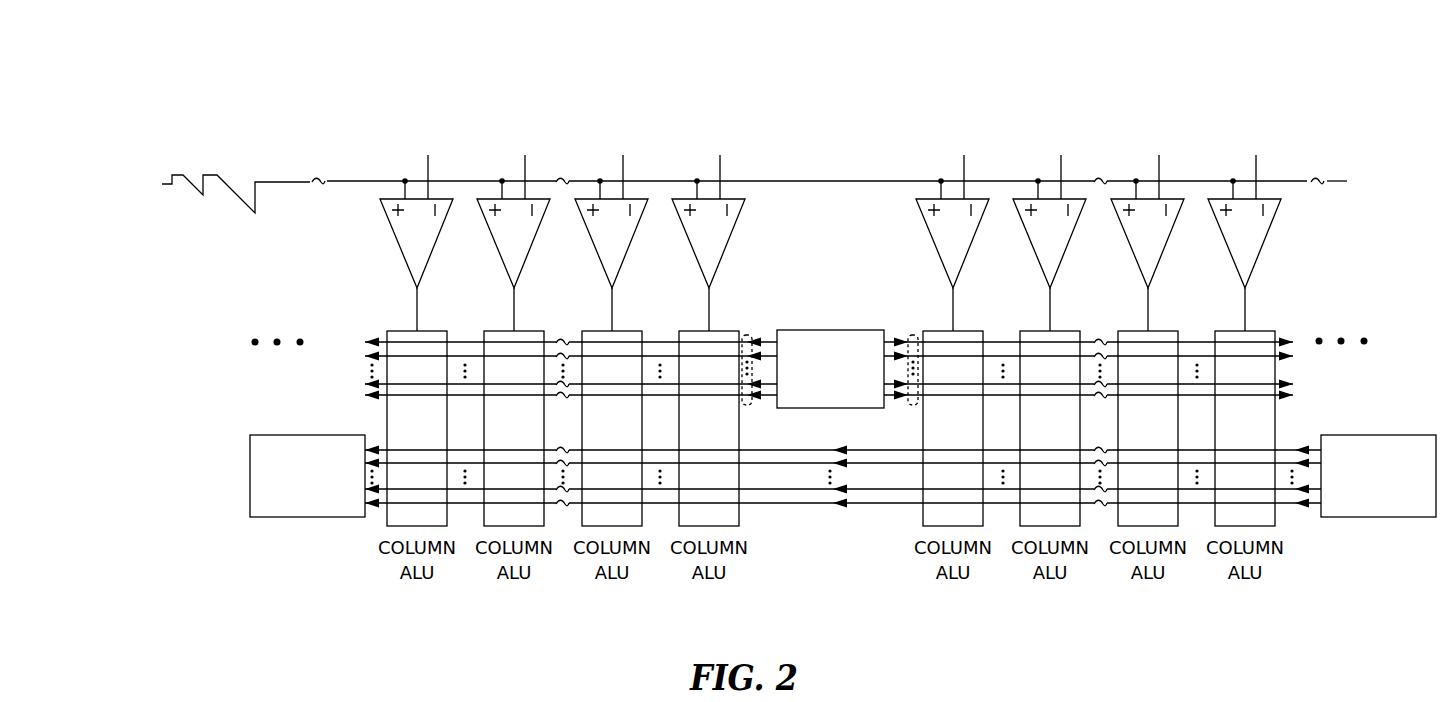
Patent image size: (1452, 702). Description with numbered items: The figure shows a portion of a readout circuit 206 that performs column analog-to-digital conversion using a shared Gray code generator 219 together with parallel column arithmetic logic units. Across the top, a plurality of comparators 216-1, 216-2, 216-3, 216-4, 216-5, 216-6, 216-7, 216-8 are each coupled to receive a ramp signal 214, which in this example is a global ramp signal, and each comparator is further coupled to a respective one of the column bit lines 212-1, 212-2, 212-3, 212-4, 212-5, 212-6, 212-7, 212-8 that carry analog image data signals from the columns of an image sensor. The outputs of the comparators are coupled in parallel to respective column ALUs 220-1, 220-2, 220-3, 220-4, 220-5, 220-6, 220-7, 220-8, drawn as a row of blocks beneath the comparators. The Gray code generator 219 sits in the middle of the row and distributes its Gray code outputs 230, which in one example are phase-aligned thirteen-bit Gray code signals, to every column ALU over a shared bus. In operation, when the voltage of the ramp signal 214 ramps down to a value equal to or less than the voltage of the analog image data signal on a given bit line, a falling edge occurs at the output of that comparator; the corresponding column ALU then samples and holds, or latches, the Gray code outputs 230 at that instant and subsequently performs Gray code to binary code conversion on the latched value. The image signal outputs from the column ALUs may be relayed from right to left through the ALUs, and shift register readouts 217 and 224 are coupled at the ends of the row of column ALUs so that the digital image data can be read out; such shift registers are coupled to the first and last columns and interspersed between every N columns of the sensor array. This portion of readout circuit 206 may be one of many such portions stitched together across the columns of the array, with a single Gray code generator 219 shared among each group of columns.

The readout circuit 206 is at (224, 59).
The column bit line 212-1 is at (428, 162).
The column bit line 212-2 is at (525, 162).
The column bit line 212-3 is at (623, 162).
The column bit line 212-4 is at (720, 162).
The column bit line 212-5 is at (964, 162).
The column bit line 212-6 is at (1061, 162).
The column bit line 212-7 is at (1159, 162).
The column bit line 212-8 is at (1256, 162).
The ramp signal 214 is at (162, 253).
The comparator 216-1 is at (395, 236).
The comparator 216-2 is at (485, 220).
The comparator 216-3 is at (609, 284).
The comparator 216-4 is at (730, 240).
The comparator 216-5 is at (927, 227).
The comparator 216-6 is at (1022, 218).
The comparator 216-7 is at (1144, 284).
The comparator 216-8 is at (1271, 228).
The shift register readout 217 is at (310, 433).
The Gray code generator 219 is at (818, 330).
The column ALU 220-1 is at (398, 332).
The column ALU 220-2 is at (493, 332).
The column ALU 220-3 is at (633, 332).
The column ALU 220-4 is at (730, 332).
The column ALU 220-5 is at (938, 332).
The column ALU 220-6 is at (1028, 332).
The column ALU 220-7 is at (1170, 332).
The column ALU 220-8 is at (1263, 332).
The shift register readout 224 is at (1378, 434).
The Gray code outputs 230 is at (913, 334).